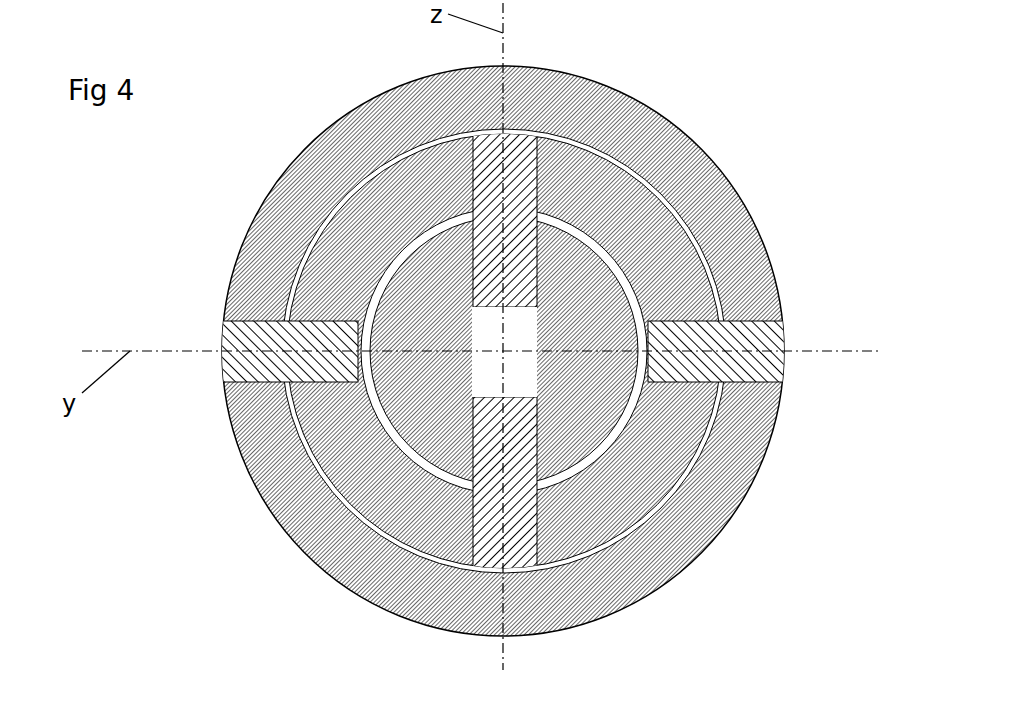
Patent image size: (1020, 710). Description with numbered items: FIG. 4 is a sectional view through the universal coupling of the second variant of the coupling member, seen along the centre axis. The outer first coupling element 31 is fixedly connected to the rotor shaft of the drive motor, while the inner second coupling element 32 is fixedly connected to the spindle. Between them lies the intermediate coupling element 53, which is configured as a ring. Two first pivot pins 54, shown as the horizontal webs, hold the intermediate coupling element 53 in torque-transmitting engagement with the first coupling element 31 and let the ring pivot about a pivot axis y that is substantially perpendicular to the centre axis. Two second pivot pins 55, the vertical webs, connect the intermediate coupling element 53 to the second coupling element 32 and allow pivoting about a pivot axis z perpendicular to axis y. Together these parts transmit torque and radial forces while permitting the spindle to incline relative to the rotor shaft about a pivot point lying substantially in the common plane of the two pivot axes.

The first coupling element 31 is at (278, 222).
The second coupling element 32 is at (432, 428).
The intermediate coupling element 53 is at (655, 460).
The first pivot pins 54 is at (222, 322).
The second pivot pins 55 is at (478, 190).